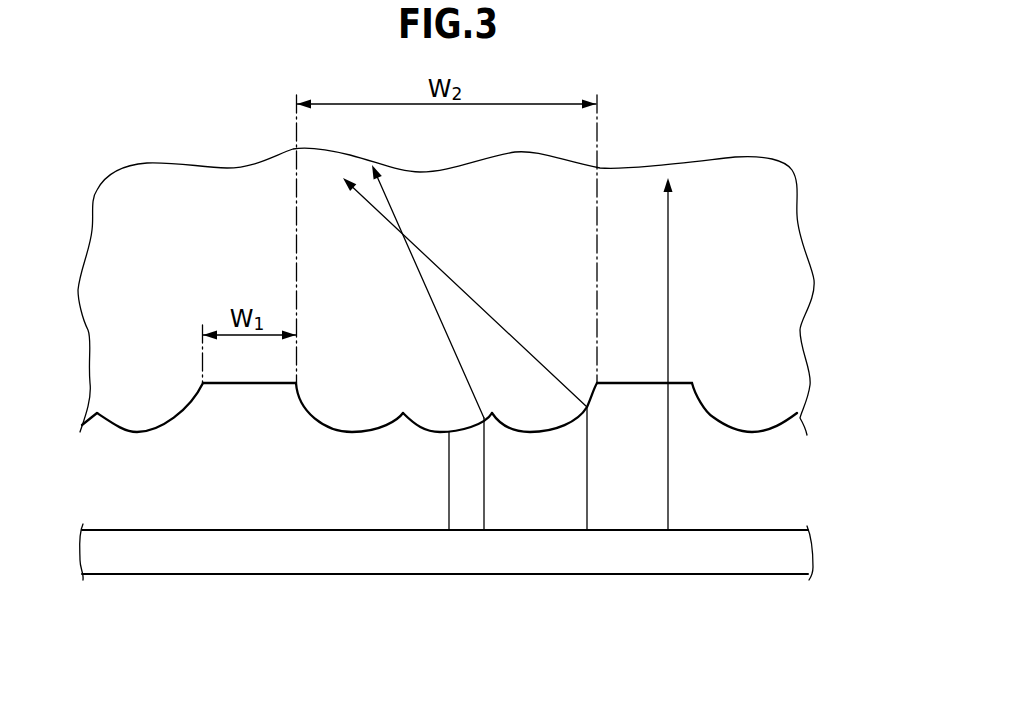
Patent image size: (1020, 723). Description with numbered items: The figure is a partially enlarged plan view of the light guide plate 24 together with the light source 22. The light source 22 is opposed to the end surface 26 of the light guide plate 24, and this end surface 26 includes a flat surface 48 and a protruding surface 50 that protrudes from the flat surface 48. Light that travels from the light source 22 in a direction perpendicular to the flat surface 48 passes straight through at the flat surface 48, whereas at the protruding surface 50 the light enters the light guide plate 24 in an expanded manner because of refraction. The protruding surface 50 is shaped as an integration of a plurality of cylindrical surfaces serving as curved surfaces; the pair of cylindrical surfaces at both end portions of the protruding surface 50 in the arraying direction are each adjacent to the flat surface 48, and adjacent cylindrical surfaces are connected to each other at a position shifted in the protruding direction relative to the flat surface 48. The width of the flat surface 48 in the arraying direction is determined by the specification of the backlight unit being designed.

The light source 22 is at (155, 560).
The light guide plate 24 is at (730, 177).
The end surface 26 is at (439, 532).
The flat surface 48 is at (250, 386).
The protruding surface 50 is at (446, 532).